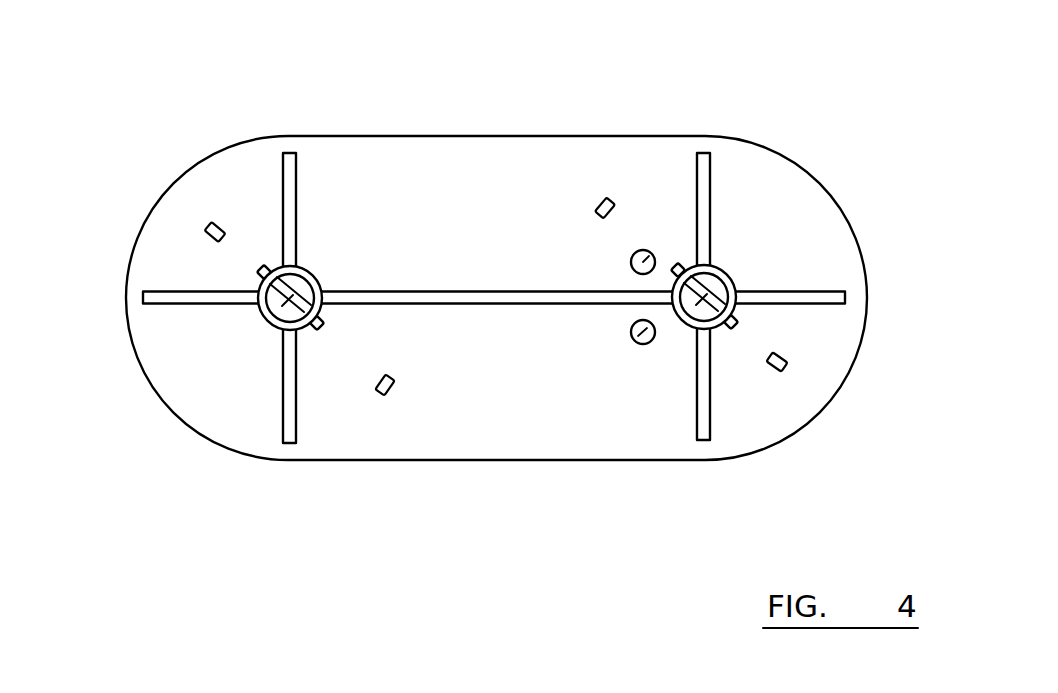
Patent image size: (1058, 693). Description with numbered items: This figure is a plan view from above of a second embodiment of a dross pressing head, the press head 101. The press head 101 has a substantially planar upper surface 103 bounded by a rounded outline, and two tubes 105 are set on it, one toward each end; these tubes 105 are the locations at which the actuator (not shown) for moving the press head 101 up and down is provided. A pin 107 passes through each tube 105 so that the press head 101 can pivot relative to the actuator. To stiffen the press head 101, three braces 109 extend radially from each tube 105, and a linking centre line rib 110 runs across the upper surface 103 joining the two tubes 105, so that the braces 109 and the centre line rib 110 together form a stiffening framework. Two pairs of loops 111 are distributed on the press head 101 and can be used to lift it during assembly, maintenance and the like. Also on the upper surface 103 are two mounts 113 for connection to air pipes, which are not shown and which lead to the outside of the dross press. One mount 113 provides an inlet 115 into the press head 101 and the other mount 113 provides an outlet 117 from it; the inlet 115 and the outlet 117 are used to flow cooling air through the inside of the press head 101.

The press head 101 is at (808, 168).
The upper surface 103 is at (505, 198).
The tube 105 is at (727, 278).
The pin 107 is at (722, 290).
The brace 109 is at (296, 165).
The centre line rib 110 is at (437, 295).
The loop 111 is at (210, 227).
The mount 113 is at (642, 256).
The inlet 115 is at (638, 336).
The outlet 117 is at (648, 250).